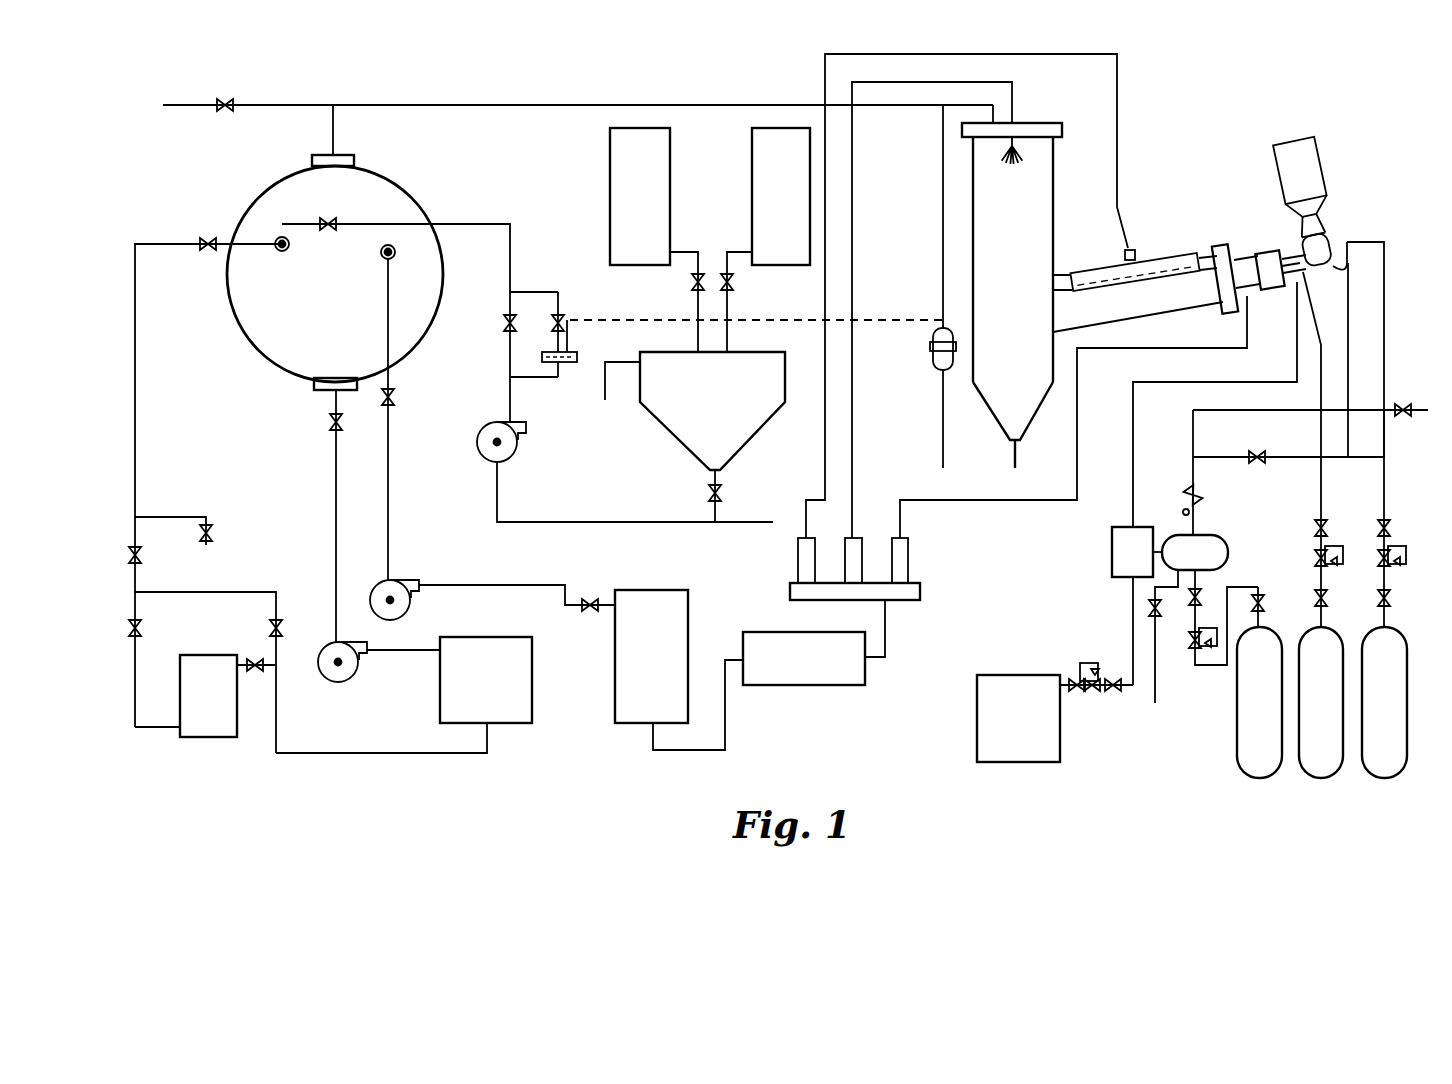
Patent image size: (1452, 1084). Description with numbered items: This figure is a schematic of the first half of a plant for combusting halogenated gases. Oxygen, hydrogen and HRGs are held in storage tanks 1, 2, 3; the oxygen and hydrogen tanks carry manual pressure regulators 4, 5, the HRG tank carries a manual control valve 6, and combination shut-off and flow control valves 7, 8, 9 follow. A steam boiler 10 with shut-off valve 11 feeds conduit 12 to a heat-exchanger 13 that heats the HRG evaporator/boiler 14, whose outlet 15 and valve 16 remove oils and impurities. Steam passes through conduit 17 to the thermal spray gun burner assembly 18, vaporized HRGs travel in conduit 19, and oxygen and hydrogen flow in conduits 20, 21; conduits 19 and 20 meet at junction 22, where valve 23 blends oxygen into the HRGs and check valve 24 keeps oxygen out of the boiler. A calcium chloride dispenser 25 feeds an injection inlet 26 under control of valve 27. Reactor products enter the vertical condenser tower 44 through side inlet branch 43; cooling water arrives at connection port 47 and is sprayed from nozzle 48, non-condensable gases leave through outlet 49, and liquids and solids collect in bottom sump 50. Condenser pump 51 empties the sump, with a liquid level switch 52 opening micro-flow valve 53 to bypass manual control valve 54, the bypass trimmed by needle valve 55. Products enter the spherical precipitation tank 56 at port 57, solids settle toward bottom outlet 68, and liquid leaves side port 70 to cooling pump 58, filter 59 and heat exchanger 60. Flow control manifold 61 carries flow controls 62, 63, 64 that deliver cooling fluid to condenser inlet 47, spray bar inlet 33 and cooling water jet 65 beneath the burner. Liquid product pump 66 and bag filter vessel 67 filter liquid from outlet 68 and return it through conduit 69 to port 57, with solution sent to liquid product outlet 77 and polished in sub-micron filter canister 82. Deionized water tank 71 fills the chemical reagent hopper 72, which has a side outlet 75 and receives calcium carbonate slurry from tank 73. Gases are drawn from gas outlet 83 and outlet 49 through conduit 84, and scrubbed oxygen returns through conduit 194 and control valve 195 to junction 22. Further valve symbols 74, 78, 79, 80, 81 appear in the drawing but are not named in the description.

The storage tank 1 is at (1385, 644).
The storage tank 2 is at (1321, 644).
The storage tank 3 is at (1254, 695).
The manual pressure regulator 4 is at (1389, 596).
The manual pressure regulator 5 is at (1327, 596).
The manual control valve 6 is at (1266, 601).
The combination shut-off and flow control valve 7 is at (1380, 558).
The combination shut-off and flow control valve 8 is at (1318, 558).
The combination shut-off and flow control valve 9 is at (1194, 648).
The steam boiler 10 is at (1006, 688).
The shut-off valve 11 is at (1116, 688).
The conduit 12 is at (1133, 640).
The heat-exchanger 13 is at (1126, 554).
The HRG evaporator/boiler 14 is at (1199, 540).
The outlet 15 is at (1178, 576).
The valve 16 is at (1149, 607).
The conduit 17 is at (1276, 375).
The thermal spray gun burner assembly 18 is at (1238, 265).
The conduit 19 is at (1348, 300).
The conduit 20 is at (1384, 270).
The conduit 21 is at (1321, 343).
The junction 22 is at (1268, 256).
The valve 23 is at (1274, 460).
The check valve 24 is at (1198, 497).
The calcium chloride dispenser 25 is at (1295, 149).
The calcium chloride injection inlet 26 is at (1324, 257).
The valve 27 is at (1308, 212).
The spray bar inlet 33 is at (1136, 254).
The side inlet branch 43 is at (1053, 287).
The vertical condenser tower 44 is at (1022, 221).
The connection port 47 is at (1015, 123).
The nozzle 48 is at (1030, 145).
The outlet 49 is at (980, 123).
The bottom sump 50 is at (1033, 390).
The condenser pump 51 is at (480, 443).
The liquid level switch 52 is at (932, 347).
The micro-flow valve 53 is at (577, 355).
The manual control valve 54 is at (508, 323).
The needle valve 55 is at (566, 321).
The precipitation tank 56 is at (405, 196).
The inlet port 57 is at (280, 239).
The cooling pump 58 is at (407, 612).
The filter 59 is at (641, 593).
The heat exchanger 60 is at (771, 640).
The flow control manifold 61 is at (908, 591).
The flow control 62 is at (860, 537).
The flow control 63 is at (801, 568).
The flow control 64 is at (907, 568).
The cooling water jet 65 is at (1247, 300).
The liquid product pump 66 is at (348, 668).
The bag filter vessel 67 is at (505, 645).
The bottom outlet 68 is at (324, 391).
The conduit 69 is at (137, 372).
The side port 70 is at (395, 252).
The storage tank 71 is at (752, 178).
The chemical reagent hopper 72 is at (741, 435).
The tank 73 is at (610, 178).
The valve 74 is at (708, 495).
The side outlet 75 is at (607, 385).
The liquid product outlet 77 is at (211, 533).
The valve 78 is at (146, 633).
The valve 79 is at (139, 577).
The valve 80 is at (256, 664).
The valve 81 is at (283, 633).
The sub-micron filter canister 82 is at (208, 739).
The precipitation tank gas outlet 83 is at (353, 156).
The conduit 84 is at (333, 105).
The conduit 194 is at (1428, 372).
The control valve 195 is at (1400, 418).